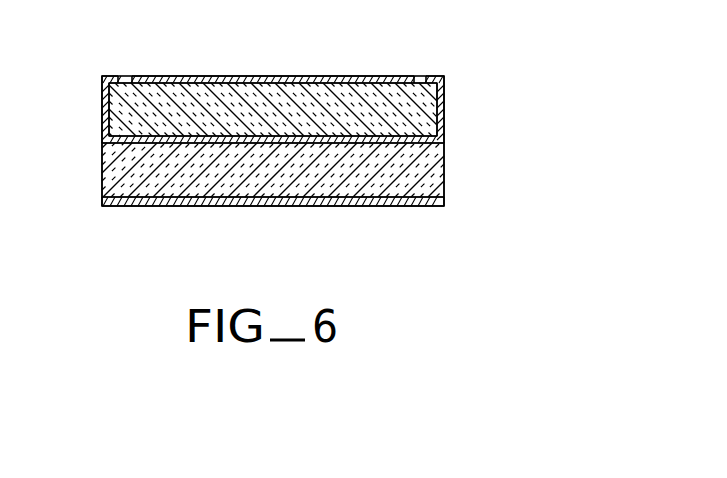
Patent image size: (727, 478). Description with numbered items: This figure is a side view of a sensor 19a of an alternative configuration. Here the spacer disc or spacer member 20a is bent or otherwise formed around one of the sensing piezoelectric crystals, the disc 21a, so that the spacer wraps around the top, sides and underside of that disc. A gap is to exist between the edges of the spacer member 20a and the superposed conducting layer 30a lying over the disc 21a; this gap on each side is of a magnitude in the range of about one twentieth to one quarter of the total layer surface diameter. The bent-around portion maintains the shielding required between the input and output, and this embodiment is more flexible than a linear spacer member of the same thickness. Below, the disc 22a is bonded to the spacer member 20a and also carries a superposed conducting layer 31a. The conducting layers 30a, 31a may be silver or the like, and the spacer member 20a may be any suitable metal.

The sensor 19a is at (127, 53).
The spacer member 20a is at (101, 113).
The disc 21a is at (256, 117).
The disc 22a is at (371, 177).
The conducting layer 30a is at (313, 76).
The conducting layer 31a is at (288, 205).